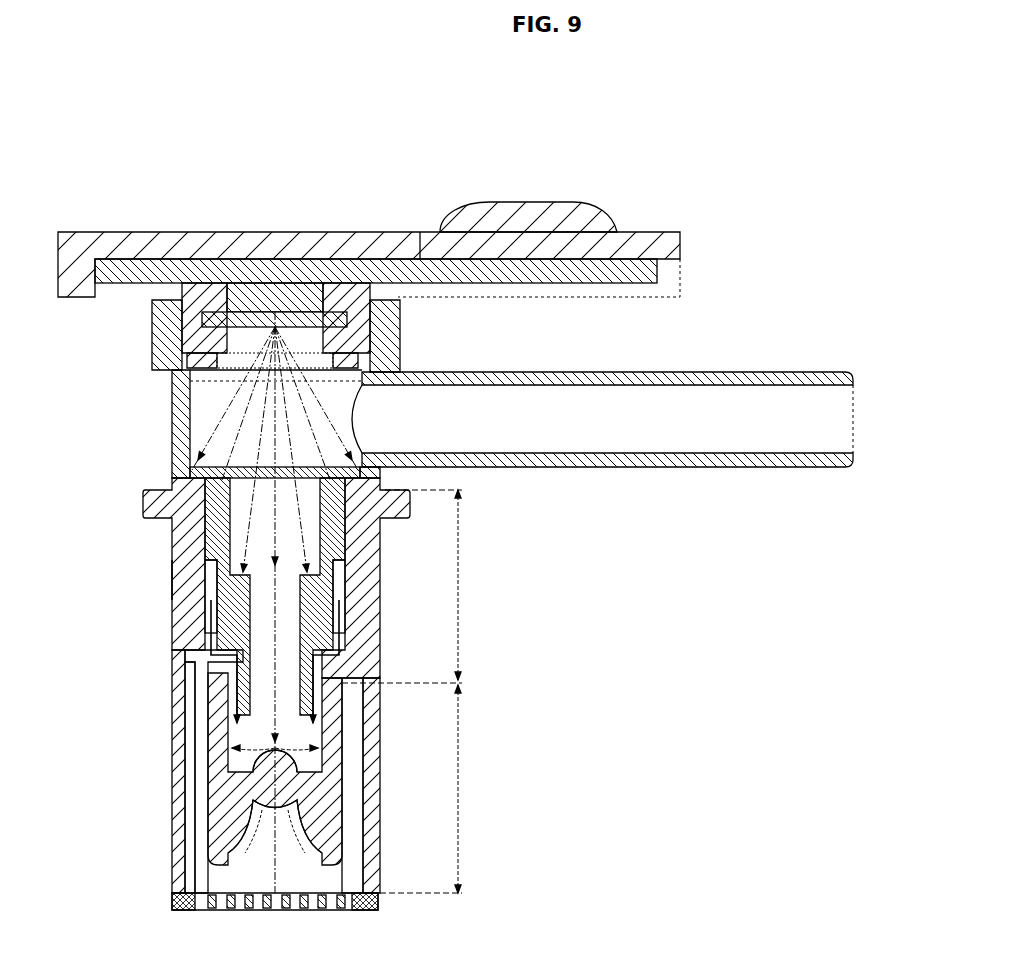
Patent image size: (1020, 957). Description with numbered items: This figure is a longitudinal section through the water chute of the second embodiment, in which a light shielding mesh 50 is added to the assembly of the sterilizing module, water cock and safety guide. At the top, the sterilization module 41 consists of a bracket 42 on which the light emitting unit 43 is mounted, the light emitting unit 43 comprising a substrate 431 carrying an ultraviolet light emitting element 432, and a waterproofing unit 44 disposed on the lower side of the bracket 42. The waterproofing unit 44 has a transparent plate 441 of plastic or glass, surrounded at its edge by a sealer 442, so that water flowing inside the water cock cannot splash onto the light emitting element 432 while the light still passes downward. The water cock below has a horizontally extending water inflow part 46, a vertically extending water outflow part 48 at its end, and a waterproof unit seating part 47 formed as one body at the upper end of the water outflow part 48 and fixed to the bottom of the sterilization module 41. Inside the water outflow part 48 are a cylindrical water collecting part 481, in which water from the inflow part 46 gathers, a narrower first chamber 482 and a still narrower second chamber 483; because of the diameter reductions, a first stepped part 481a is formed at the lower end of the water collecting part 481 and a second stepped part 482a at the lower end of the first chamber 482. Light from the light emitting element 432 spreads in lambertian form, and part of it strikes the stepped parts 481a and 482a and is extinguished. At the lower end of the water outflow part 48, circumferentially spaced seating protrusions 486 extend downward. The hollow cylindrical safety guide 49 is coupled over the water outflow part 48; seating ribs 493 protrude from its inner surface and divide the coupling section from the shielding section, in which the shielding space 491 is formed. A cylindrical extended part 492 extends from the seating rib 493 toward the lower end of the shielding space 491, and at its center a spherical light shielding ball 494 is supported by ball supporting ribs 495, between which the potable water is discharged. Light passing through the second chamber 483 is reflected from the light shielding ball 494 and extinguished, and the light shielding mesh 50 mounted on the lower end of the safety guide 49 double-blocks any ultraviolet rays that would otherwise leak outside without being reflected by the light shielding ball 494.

The sterilization module 41 is at (377, 136).
The bracket 42 is at (213, 247).
The light emitting unit 43 is at (320, 173).
The substrate 431 is at (305, 272).
The light emitting element 432 is at (269, 290).
The waterproofing unit 44 is at (406, 173).
The transparent plate 441 is at (352, 305).
The sealer 442 is at (372, 303).
The water inflow part 46 is at (760, 371).
The waterproof unit seating part 47 is at (398, 332).
The water outflow part 48 is at (63, 421).
The water collecting part 481 is at (172, 410).
The stepped part 481a is at (172, 480).
The first chamber 482 is at (200, 535).
The stepped part 482a is at (170, 575).
The second chamber 483 is at (200, 608).
The seating protrusions 486 is at (193, 640).
The safety guide 49 is at (380, 578).
The shielding space 491 is at (353, 825).
The extended part 492 is at (208, 768).
The seating ribs 493 is at (350, 680).
The light shielding ball 494 is at (273, 840).
The ball supporting ribs 495 is at (240, 840).
The light shielding mesh 50 is at (380, 905).